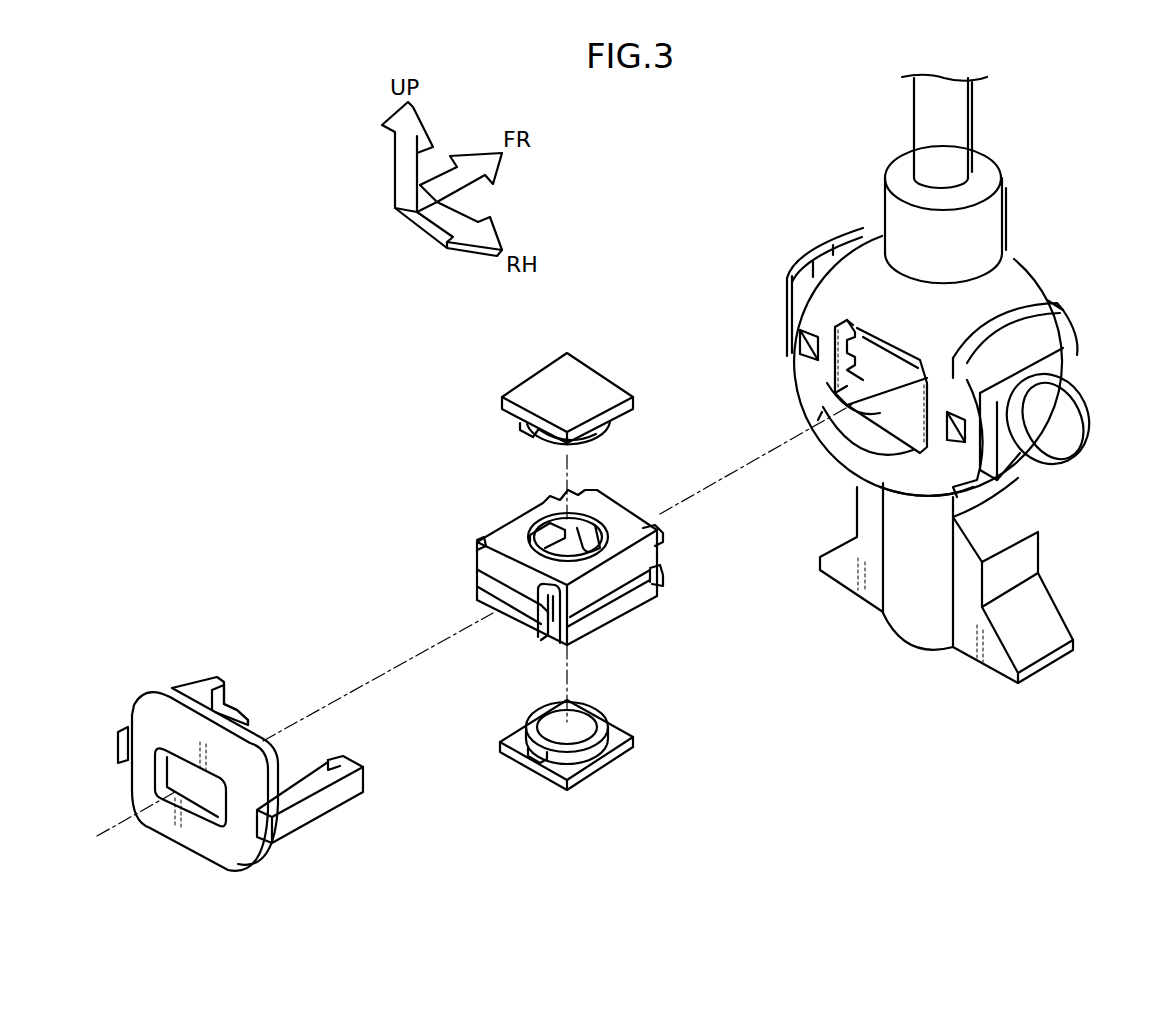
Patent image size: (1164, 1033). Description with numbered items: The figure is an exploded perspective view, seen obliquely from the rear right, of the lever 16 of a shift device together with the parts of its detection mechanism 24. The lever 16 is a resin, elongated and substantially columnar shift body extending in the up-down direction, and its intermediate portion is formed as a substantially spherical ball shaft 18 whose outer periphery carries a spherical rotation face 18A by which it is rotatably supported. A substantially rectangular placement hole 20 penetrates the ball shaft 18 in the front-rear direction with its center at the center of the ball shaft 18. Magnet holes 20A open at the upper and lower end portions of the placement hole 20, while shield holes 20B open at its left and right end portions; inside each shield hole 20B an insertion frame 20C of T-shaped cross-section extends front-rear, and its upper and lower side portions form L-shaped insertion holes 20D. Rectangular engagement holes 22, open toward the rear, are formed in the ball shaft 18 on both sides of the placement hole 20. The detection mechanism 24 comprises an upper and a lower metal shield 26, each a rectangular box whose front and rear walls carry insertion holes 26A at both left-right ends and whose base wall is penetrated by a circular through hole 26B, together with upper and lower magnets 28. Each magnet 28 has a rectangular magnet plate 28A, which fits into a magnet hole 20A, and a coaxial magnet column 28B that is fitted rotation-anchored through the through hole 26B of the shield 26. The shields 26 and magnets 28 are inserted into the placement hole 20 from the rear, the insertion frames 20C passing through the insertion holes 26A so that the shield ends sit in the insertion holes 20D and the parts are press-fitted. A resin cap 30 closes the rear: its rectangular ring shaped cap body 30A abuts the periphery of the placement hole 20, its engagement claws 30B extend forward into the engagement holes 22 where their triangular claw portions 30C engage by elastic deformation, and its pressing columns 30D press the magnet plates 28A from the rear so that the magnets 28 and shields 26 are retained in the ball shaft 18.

The lever 16 is at (1010, 180).
The ball shaft 18 is at (1023, 263).
The rotation face 18A is at (860, 225).
The placement hole 20 is at (858, 415).
The magnet hole 20A is at (840, 262).
The shield hole 20B is at (835, 384).
The insertion frame 20C is at (820, 413).
The insertion hole 20D is at (837, 335).
The engagement hole 22 is at (800, 340).
The detection mechanism 24 is at (287, 370).
The shield 26 is at (500, 523).
The insertion hole 26A is at (590, 520).
The through hole 26B is at (548, 512).
The magnet 28 is at (540, 360).
The magnet plate 28A is at (600, 372).
The magnet column 28B is at (612, 426).
The cap 30 is at (187, 847).
The cap body 30A is at (267, 767).
The engagement claw 30B is at (185, 690).
The claw portion 30C is at (227, 698).
The pressing column 30D is at (247, 712).